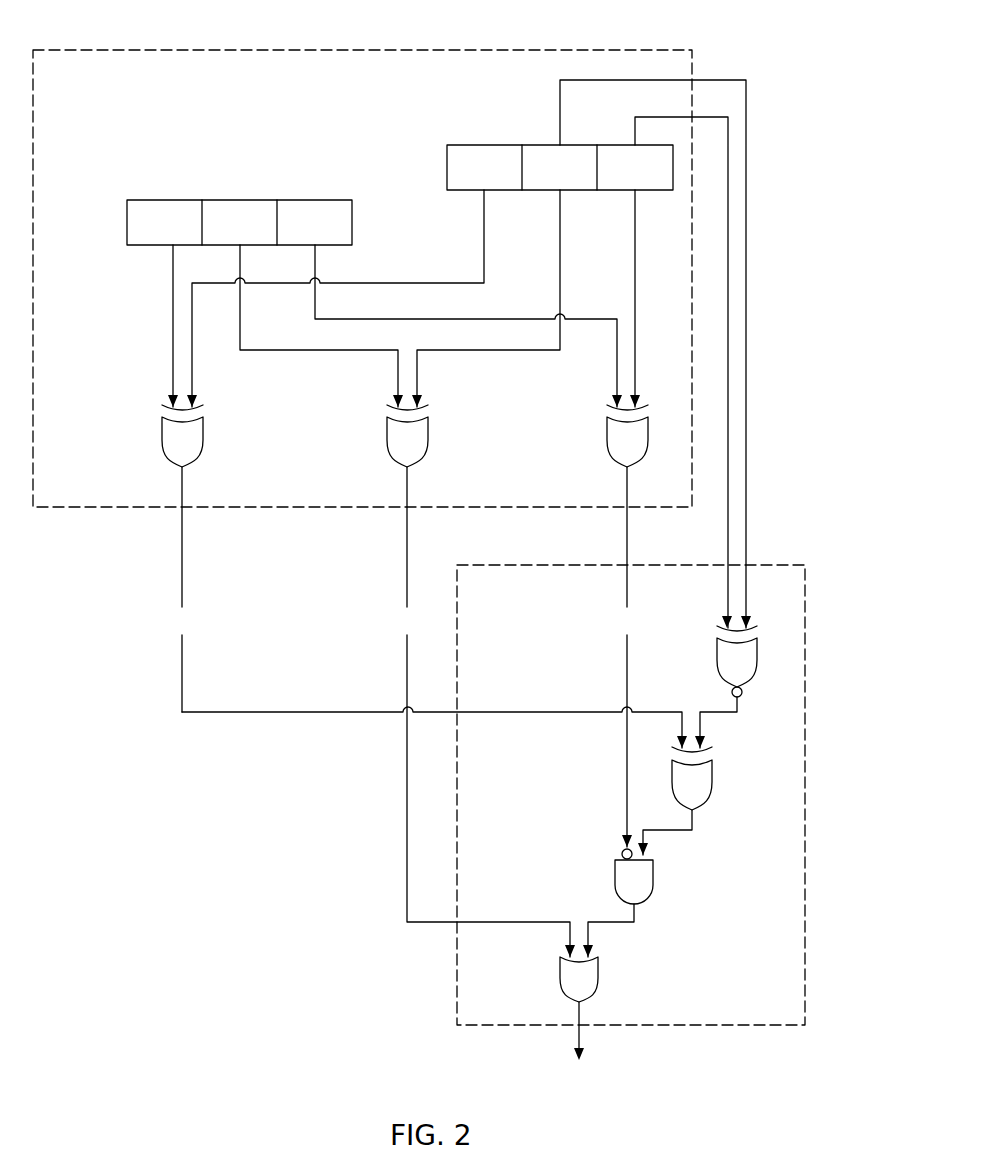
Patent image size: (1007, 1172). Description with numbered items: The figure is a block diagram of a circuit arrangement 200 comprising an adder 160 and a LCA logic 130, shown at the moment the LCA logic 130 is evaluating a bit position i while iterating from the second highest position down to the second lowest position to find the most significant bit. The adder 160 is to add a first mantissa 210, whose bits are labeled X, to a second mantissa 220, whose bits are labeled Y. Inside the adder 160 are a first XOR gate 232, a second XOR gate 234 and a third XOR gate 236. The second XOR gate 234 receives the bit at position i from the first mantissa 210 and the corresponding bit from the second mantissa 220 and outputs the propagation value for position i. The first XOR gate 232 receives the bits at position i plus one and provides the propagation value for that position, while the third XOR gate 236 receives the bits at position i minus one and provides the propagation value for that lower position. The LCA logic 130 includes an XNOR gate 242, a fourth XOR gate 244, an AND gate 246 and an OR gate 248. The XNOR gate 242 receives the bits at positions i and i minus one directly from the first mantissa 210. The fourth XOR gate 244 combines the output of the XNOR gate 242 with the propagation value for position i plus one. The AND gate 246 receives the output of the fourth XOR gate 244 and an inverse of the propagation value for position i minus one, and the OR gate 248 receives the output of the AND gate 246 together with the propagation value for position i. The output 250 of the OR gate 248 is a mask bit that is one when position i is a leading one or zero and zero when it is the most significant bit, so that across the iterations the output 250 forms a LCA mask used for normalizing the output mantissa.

The booth encoder circuit 200 is at (815, 75).
The adder 160 is at (362, 278).
The LCA logic 130 is at (631, 795).
The first mantissa 210 is at (452, 143).
The second mantissa 220 is at (163, 198).
The first exclusive-OR (XOR) gate 232 is at (163, 438).
The second XOR gate 234 is at (388, 438).
The third XOR gate 236 is at (607, 438).
The exclusive-NOR (XNOR) gate 242 is at (717, 660).
The fourth XOR gate 244 is at (712, 782).
The AND gate 246 is at (653, 888).
The OR gate 248 is at (598, 978).
The output 250 is at (581, 1044).